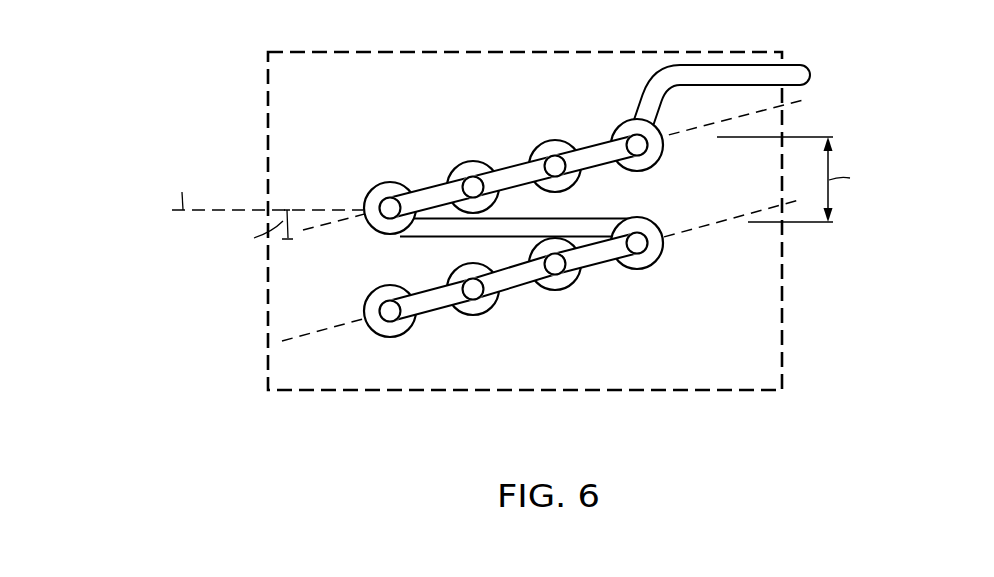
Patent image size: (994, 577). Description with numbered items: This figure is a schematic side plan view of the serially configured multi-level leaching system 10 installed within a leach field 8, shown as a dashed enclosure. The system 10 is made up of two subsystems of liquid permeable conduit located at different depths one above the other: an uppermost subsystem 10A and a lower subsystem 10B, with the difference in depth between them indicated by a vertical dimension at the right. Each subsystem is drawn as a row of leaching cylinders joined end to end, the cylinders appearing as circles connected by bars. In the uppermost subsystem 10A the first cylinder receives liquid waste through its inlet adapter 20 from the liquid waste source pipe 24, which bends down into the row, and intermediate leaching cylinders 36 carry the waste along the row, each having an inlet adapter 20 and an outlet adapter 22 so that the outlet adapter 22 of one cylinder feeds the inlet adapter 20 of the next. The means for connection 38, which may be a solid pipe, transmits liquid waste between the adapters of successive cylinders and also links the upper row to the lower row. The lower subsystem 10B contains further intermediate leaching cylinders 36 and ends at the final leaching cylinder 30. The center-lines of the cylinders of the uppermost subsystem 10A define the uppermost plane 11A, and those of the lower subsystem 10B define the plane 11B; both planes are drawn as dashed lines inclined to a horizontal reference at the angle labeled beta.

The leach bed 8 is at (768, 358).
The system 10 is at (323, 408).
The uppermost subsystem 10A is at (480, 109).
The subsystem 10B is at (528, 327).
The uppermost plane 11A is at (314, 238).
The plane 11B is at (305, 330).
The inlet adapter 20 is at (538, 149).
The outlet adapter 22 is at (478, 161).
The liquid waste source pipe 24 is at (795, 72).
The final leaching cylinder 30 is at (378, 336).
The intermediate leaching cylinders 36 is at (377, 185).
The means for connection 38 is at (446, 239).